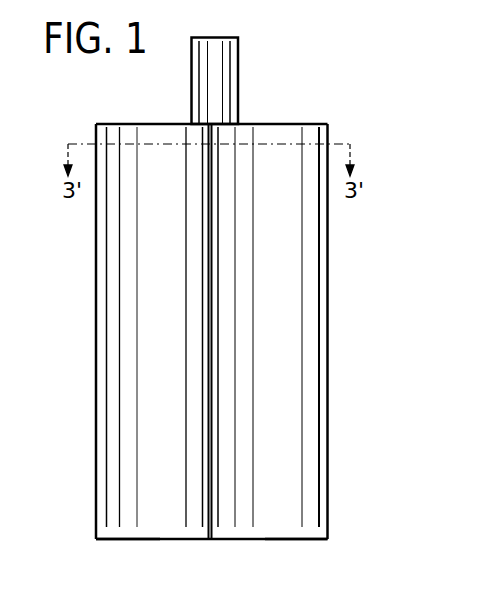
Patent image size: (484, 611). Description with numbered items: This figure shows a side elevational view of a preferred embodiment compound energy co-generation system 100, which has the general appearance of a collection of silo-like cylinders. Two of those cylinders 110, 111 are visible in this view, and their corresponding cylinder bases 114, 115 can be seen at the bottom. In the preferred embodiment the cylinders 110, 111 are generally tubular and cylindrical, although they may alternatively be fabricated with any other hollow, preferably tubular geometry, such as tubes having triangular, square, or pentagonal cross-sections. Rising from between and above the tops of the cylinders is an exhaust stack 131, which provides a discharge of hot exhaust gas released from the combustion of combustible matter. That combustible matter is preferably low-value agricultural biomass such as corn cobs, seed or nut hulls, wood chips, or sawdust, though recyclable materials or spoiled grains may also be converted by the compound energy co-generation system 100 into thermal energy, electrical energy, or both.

The compound energy co-generation system 100 is at (220, 308).
The exhaust stack 131 is at (238, 71).
The cylinder 110 is at (102, 305).
The cylinder 111 is at (310, 273).
The cylinder base 114 is at (115, 540).
The cylinder base 115 is at (315, 541).